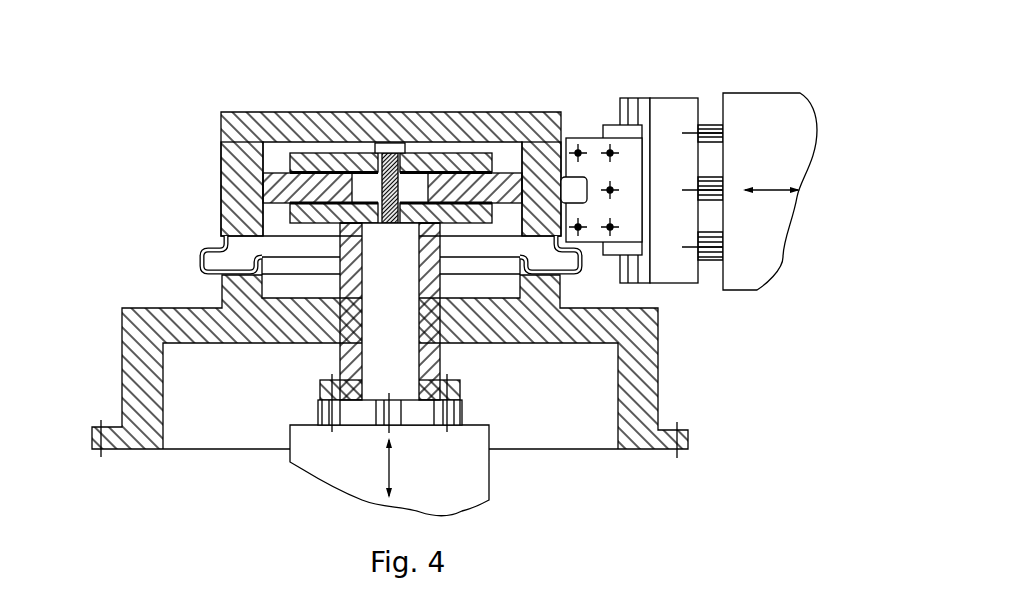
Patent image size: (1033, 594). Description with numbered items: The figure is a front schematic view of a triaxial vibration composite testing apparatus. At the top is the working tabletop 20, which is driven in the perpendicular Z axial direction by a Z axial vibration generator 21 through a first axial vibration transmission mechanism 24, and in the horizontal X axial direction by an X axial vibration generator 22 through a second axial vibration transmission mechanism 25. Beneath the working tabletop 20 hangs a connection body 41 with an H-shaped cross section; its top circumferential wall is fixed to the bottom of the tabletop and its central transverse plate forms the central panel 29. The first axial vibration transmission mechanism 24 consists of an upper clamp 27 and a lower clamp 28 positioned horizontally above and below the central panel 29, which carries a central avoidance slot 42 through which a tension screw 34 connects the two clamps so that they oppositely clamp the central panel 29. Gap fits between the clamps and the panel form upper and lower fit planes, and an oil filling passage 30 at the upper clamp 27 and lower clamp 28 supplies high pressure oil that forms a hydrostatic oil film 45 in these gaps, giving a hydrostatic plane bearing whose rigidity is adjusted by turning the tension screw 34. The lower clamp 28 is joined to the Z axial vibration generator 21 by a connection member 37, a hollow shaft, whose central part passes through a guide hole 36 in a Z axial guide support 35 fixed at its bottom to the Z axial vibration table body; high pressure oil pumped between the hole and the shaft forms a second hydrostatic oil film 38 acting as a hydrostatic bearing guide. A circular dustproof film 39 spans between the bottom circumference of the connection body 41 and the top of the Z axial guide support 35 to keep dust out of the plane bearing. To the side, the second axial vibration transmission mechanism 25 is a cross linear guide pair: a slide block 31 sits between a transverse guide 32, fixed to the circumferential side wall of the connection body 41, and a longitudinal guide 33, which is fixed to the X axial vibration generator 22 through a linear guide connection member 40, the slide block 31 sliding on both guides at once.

The working tabletop 20 is at (276, 111).
The Z axial vibration generator 21 is at (338, 460).
The X axial vibration generator 22 is at (745, 275).
The first axial vibration transmission mechanism 24 is at (270, 212).
The second axial vibration transmission mechanism 25 is at (578, 120).
The upper clamp 27 is at (290, 156).
The lower clamp 28 is at (218, 238).
The central panel 29 is at (300, 182).
The oil filling passage 30 is at (483, 153).
The slide block 31 is at (600, 147).
The transverse guide 32 is at (562, 125).
The longitudinal guide 33 is at (624, 100).
The tension screw 34 is at (366, 180).
The Z axial guide support 35 is at (142, 358).
The guide hole 36 is at (443, 330).
The connection member 37 is at (446, 363).
The hydrostatic oil film 38 is at (302, 343).
The circular dustproof film 39 is at (205, 263).
The linear guide connection member 40 is at (672, 117).
The connection body 41 is at (228, 146).
The avoidance slot 42 is at (360, 183).
The hydrostatic oil film 45 is at (428, 160).